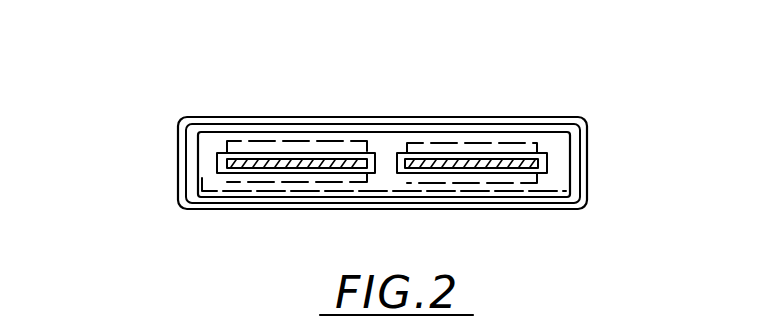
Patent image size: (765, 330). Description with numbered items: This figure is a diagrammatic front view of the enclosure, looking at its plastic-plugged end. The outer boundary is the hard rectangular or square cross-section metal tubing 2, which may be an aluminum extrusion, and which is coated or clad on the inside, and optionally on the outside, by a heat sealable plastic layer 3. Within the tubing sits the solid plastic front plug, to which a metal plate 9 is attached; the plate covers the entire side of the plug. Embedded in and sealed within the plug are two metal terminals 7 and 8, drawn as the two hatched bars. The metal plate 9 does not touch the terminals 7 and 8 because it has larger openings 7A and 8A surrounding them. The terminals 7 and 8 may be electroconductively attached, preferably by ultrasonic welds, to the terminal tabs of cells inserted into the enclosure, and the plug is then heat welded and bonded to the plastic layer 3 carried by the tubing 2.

The metal tubing 2 is at (393, 117).
The heat sealable plastic layer 3 is at (255, 132).
The metal plate 9 is at (208, 174).
The metal terminal 8 is at (219, 168).
The opening 8A is at (263, 173).
The opening 7A is at (549, 110).
The metal terminal 7 is at (540, 163).